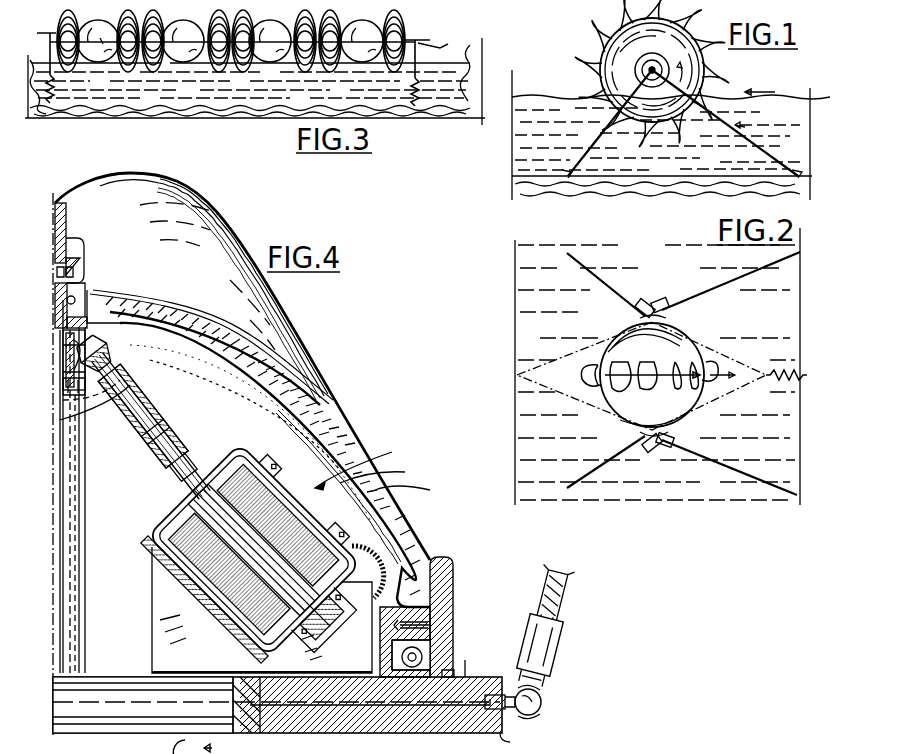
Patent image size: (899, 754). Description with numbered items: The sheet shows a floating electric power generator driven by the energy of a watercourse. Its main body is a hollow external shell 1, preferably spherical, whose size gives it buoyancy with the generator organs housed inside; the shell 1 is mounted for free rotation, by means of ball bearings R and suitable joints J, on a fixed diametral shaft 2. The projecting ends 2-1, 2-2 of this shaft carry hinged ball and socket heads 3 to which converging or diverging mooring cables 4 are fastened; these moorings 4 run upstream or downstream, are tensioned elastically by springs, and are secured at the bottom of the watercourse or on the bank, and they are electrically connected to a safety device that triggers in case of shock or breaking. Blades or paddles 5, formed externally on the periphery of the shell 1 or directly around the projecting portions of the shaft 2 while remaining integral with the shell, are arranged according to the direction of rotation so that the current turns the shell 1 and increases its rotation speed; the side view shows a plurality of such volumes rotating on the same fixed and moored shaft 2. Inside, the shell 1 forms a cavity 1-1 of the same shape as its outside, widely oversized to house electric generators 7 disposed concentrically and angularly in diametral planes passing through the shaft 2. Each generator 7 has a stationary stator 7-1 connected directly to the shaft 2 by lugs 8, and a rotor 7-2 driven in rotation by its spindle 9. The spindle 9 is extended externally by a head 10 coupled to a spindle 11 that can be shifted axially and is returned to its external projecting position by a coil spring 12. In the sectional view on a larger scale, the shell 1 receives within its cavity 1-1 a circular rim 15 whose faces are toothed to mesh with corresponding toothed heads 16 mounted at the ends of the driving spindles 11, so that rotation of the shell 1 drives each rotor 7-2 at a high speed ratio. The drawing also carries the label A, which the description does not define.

In FIG. 3, the shell 1 is at (276, 22).
In FIG. 1, the shell 1 is at (692, 80).
In FIG. 2, the shell 1 is at (659, 375).
In FIG. 4, the shell 1 is at (368, 427).
In FIG. 4, the cavity 1-1 is at (300, 408).
In FIG. 3, the diametral shaft 2 is at (50, 34).
In FIG. 4, the diametral shaft 2 is at (62, 692).
In FIG. 2, the projecting end of shaft 2-1 is at (678, 436).
In FIG. 2, the projecting end of shaft 2-2 is at (671, 322).
In FIG. 4, the projecting end of shaft 2-2 is at (514, 741).
In FIG. 2, the ball and socket head 3 is at (649, 468).
In FIG. 4, the ball and socket head 3 is at (538, 700).
In FIG. 3, the mooring cable 4 is at (436, 44).
In FIG. 1, the mooring cable 4 is at (754, 132).
In FIG. 2, the mooring cable 4 is at (739, 460).
In FIG. 4, the mooring cable 4 is at (548, 578).
In FIG. 3, the blade 5 is at (325, 20).
In FIG. 1, the blade 5 is at (704, 40).
In FIG. 2, the blade 5 is at (725, 362).
In FIG. 4, the blade 5 is at (203, 238).
In FIG. 4, the electric generator 7 is at (353, 466).
In FIG. 4, the stator 7-1 is at (376, 470).
In FIG. 4, the rotor 7-2 is at (407, 485).
In FIG. 4, the lug 8 is at (400, 560).
In FIG. 4, the spindle 9 is at (188, 503).
In FIG. 4, the head 10 is at (135, 425).
In FIG. 4, the driving spindle 11 is at (70, 410).
In FIG. 4, the coil spring 12 is at (162, 413).
In FIG. 4, the circular rim 15 is at (63, 362).
In FIG. 4, the toothed head 16 is at (65, 389).
In FIG. 4, the ball bearing R is at (465, 640).
In FIG. 4, the joint J is at (456, 672).
In FIG. 4, the section indicator A is at (201, 746).